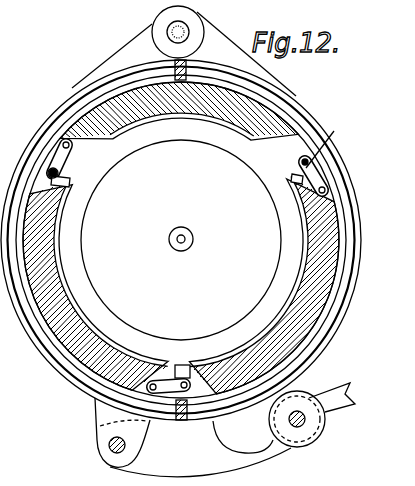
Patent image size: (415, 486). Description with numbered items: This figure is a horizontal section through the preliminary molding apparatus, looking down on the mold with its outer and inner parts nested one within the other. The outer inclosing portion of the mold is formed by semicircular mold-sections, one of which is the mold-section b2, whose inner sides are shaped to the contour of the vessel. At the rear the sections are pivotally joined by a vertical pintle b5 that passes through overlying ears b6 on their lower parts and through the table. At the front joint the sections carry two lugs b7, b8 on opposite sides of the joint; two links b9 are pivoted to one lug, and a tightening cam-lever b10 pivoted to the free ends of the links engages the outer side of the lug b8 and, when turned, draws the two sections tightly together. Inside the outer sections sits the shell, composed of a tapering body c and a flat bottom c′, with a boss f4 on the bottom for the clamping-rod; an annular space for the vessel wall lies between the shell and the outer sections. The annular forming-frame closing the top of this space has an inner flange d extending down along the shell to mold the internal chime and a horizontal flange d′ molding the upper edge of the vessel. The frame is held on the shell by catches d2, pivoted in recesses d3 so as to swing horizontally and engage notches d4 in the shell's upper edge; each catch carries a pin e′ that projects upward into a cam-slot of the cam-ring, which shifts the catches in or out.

The inner flange d is at (87, 320).
The notches d4 is at (69, 188).
The catches d2 is at (55, 133).
The recesses d3 is at (47, 150).
The horizontal flange d′ is at (50, 172).
The tapering body c is at (181, 236).
The flat bottom c′ is at (118, 261).
The boss f4 is at (194, 240).
The pin e′ is at (327, 140).
The ears b6 is at (153, 30).
The vertical pintle b5 is at (190, 26).
The lug b7 is at (98, 438).
The lug b8 is at (222, 421).
The links b9 is at (200, 462).
The tightening cam-lever b10 is at (318, 428).
The semicircular mold-section b2 is at (330, 337).